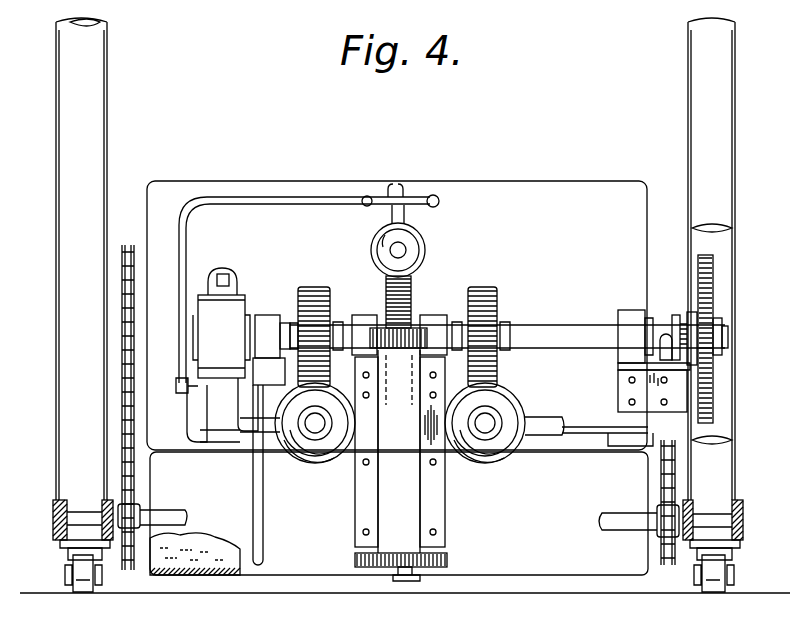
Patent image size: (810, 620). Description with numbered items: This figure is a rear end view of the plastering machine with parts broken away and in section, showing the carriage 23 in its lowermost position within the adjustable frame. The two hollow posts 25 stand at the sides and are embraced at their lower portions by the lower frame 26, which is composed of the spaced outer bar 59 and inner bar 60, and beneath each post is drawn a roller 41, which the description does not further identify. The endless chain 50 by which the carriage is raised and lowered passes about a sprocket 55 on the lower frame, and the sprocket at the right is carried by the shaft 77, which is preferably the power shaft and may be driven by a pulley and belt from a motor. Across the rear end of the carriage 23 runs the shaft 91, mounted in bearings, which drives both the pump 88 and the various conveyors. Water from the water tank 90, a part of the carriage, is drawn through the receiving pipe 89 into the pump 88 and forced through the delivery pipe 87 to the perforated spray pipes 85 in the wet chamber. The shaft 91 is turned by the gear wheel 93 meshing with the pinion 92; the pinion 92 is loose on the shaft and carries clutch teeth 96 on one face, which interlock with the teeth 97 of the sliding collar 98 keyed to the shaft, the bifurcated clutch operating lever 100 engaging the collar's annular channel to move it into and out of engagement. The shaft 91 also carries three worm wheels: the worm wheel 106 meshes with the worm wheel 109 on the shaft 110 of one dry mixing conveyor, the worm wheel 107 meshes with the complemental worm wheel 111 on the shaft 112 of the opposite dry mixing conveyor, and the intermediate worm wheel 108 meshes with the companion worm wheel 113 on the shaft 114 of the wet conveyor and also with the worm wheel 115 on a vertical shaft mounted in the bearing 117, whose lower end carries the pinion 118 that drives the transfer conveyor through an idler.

The carriage 23 is at (518, 183).
The hollow posts 25 is at (97, 122).
The lower frame 26 is at (58, 500).
The roller 41 is at (76, 578).
The chain 50 is at (128, 340).
The sprocket 55 is at (128, 560).
The outer bar 59 is at (58, 525).
The inner bar 60 is at (102, 500).
The power shaft 77 is at (616, 527).
The spray pipes 85 is at (432, 198).
The delivery pipe 87 is at (236, 200).
The pump 88 is at (240, 288).
The receiving pipe 89 is at (255, 518).
The water tank 90 is at (246, 565).
The shaft 91 is at (545, 330).
The pinion 92 is at (716, 310).
The gear wheel 93 is at (713, 272).
The clutch teeth 96 is at (694, 318).
The teeth 97 is at (675, 318).
The sliding collar 98 is at (648, 319).
The clutch operating lever 100 is at (660, 358).
The worm wheel 106 is at (318, 288).
The worm wheel 107 is at (492, 288).
The intermediate worm wheel 108 is at (412, 290).
The worm wheel 109 is at (272, 446).
The shaft 110 is at (315, 430).
The worm wheel 111 is at (522, 402).
The shaft 112 is at (490, 425).
The worm wheel 113 is at (422, 238).
The shaft 114 is at (406, 250).
The worm wheel 115 is at (408, 333).
The bearing 117 is at (390, 503).
The pinion 118 is at (355, 561).